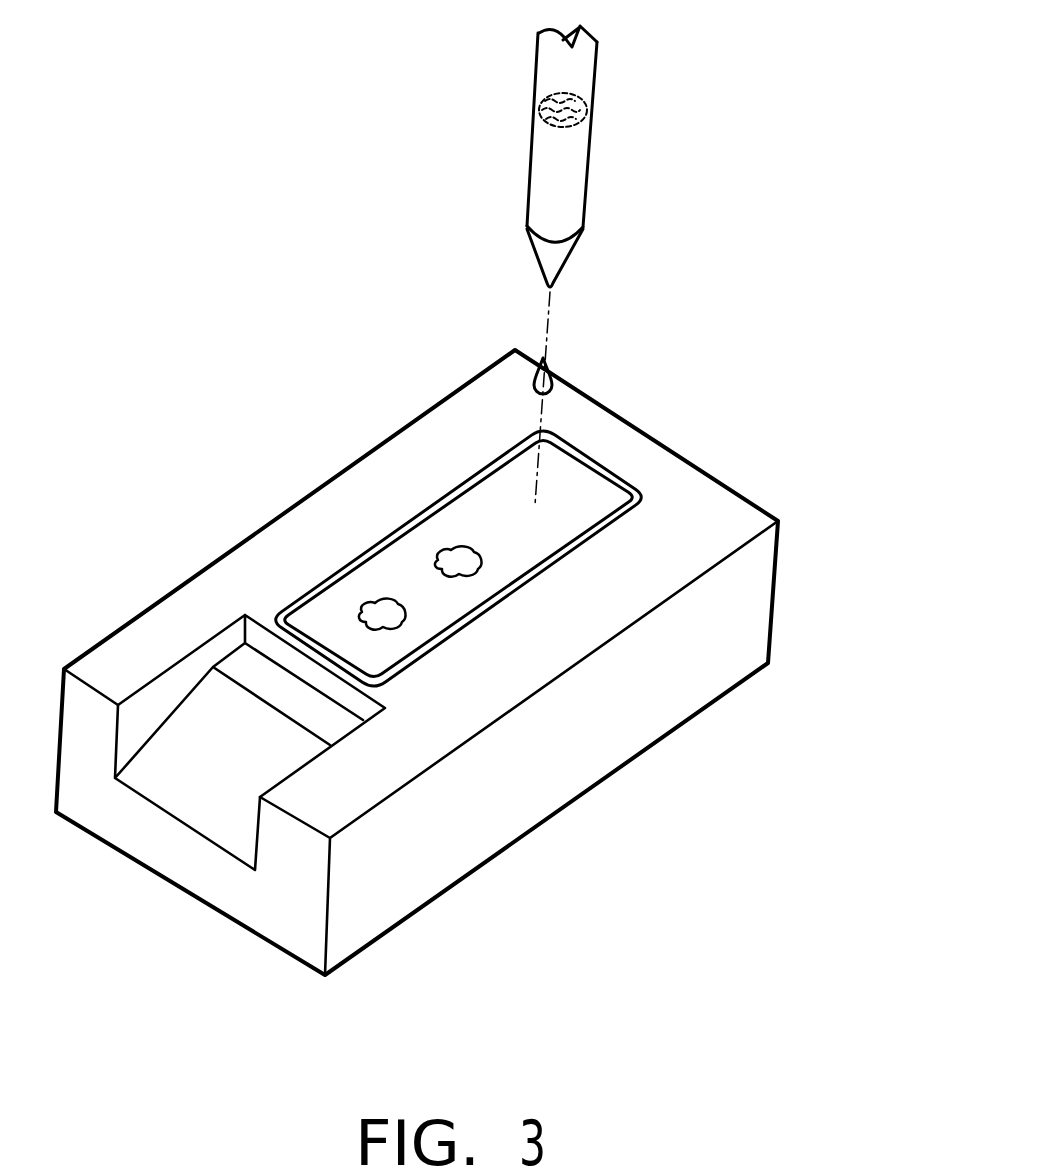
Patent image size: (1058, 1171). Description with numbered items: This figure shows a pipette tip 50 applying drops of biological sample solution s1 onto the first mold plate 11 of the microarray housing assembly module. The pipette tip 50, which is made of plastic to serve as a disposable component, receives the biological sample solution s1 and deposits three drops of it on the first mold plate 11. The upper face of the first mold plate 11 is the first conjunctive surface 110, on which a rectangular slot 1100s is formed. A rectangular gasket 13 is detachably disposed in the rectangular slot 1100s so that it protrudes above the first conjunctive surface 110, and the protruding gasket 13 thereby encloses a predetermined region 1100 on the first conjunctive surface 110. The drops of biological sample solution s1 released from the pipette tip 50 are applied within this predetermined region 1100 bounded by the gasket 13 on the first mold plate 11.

The first mold plate 11 is at (499, 627).
The first conjunctive surface 110 is at (682, 493).
The predetermined region 1100 is at (574, 574).
The rectangular slot 1100s is at (603, 460).
The rectangular gasket 13 is at (568, 428).
The pipette tip 50 is at (608, 202).
The biological sample solution s1 is at (575, 155).